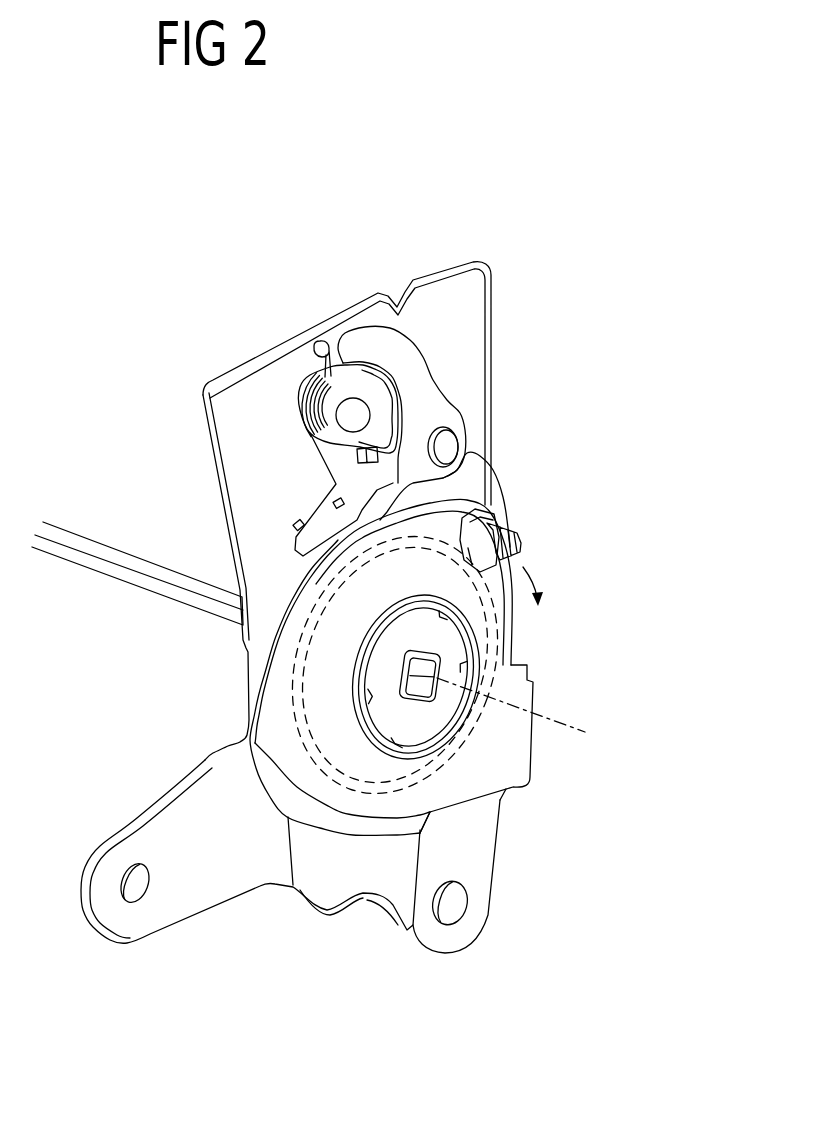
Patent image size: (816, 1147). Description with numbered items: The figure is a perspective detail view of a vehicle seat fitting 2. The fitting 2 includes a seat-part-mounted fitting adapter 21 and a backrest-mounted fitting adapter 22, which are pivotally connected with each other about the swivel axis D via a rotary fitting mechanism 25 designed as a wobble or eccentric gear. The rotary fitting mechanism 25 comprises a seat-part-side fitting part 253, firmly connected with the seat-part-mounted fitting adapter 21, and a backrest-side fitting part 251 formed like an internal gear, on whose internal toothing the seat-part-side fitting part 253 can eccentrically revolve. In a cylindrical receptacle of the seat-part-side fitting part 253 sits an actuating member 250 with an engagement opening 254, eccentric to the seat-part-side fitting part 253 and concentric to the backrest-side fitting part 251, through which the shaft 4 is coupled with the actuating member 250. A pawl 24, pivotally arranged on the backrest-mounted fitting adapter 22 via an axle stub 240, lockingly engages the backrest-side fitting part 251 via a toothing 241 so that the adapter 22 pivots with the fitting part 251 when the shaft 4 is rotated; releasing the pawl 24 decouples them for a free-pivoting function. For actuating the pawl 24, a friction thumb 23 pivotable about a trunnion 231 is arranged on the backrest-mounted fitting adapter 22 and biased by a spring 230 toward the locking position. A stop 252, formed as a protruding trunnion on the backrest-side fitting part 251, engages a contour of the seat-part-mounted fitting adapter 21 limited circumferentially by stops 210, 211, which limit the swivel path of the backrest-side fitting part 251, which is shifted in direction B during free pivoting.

The fitting 2 is at (610, 588).
The shaft 4 is at (162, 587).
The seat-part-mounted fitting adapter 21 is at (230, 873).
The backrest-mounted fitting adapter 22 is at (438, 300).
The friction thumb 23 is at (340, 461).
The pawl 24 is at (437, 402).
The rotary fitting mechanism 25 is at (440, 724).
The stop 210 is at (500, 516).
The stop 211 is at (527, 665).
The spring 230 is at (310, 400).
The trunnion 231 is at (343, 373).
The axle stub 240 is at (450, 447).
The toothing 241 is at (390, 520).
The actuating member 250 is at (407, 733).
The backrest-side fitting part 251 is at (483, 482).
The stop 252 is at (512, 547).
The seat-part-side fitting part 253 is at (468, 623).
The engagement opening 254 is at (403, 687).
The direction B is at (541, 588).
The swivel axis D is at (585, 732).